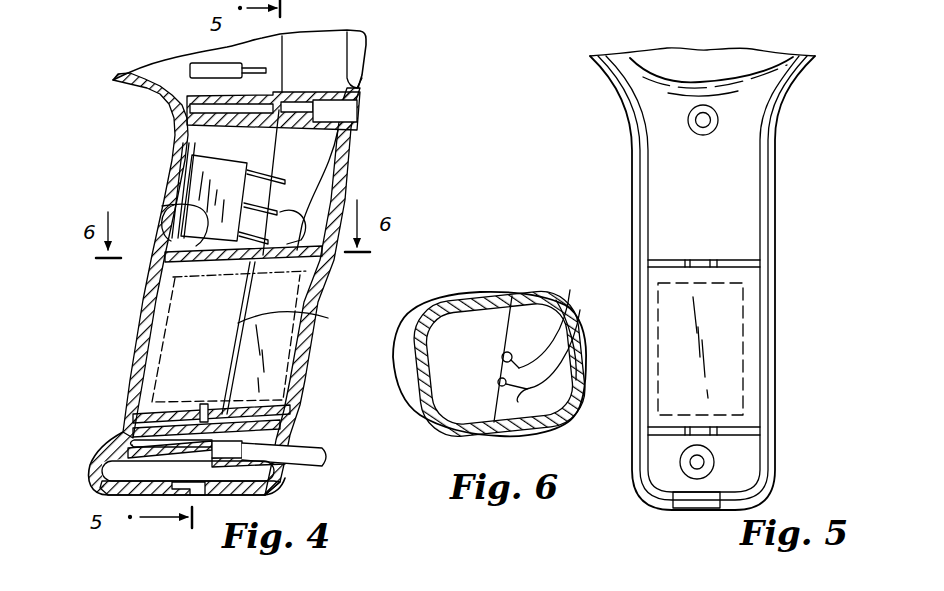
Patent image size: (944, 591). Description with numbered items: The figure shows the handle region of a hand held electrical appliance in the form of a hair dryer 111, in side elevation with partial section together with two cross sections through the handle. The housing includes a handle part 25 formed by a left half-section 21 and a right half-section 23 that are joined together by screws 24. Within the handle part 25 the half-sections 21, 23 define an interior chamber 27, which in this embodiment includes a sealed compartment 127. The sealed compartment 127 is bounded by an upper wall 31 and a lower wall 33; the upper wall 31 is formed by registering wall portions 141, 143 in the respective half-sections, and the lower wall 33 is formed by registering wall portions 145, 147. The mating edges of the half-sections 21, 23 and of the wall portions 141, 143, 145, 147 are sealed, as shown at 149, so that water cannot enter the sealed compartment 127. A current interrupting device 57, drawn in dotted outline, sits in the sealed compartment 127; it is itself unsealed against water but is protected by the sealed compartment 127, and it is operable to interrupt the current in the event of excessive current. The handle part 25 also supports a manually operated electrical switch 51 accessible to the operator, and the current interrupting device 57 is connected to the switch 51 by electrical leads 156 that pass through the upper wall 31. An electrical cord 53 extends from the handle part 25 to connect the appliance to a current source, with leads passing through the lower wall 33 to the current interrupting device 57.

In FIG. 4, the hair dryer 111 is at (88, 283).
In FIG. 4, the left half-section 21 is at (150, 311).
In FIG. 6, the left half-section 21 is at (481, 300).
In FIG. 4, the right half-section 23 is at (320, 297).
In FIG. 6, the right half-section 23 is at (503, 423).
In FIG. 5, the right half-section 23 is at (777, 131).
In FIG. 5, the screws 24 is at (688, 122).
In FIG. 5, the handle part 25 is at (786, 201).
In FIG. 4, the interior chamber 27 is at (317, 143).
In FIG. 4, the upper wall 31 is at (214, 262).
In FIG. 6, the upper wall 31 is at (473, 373).
In FIG. 5, the upper wall 31 is at (737, 267).
In FIG. 4, the lower wall 33 is at (183, 413).
In FIG. 5, the lower wall 33 is at (731, 424).
In FIG. 4, the electrical switch 51 is at (222, 170).
In FIG. 4, the electrical cord 53 is at (320, 443).
In FIG. 4, the current interrupting device 57 is at (172, 341).
In FIG. 5, the current interrupting device 57 is at (720, 326).
In FIG. 4, the sealed compartment 127 is at (307, 276).
In FIG. 4, the wall portion 141 is at (162, 206).
In FIG. 6, the wall portion 141 is at (493, 325).
In FIG. 4, the wall portion 143 is at (352, 194).
In FIG. 6, the wall portion 143 is at (578, 410).
In FIG. 4, the wall portion 145 is at (123, 434).
In FIG. 4, the wall portion 147 is at (258, 413).
In FIG. 4, the seal 149 is at (303, 321).
In FIG. 6, the seal 149 is at (555, 315).
In FIG. 4, the electrical leads 156 is at (345, 170).
In FIG. 6, the electrical leads 156 is at (566, 351).